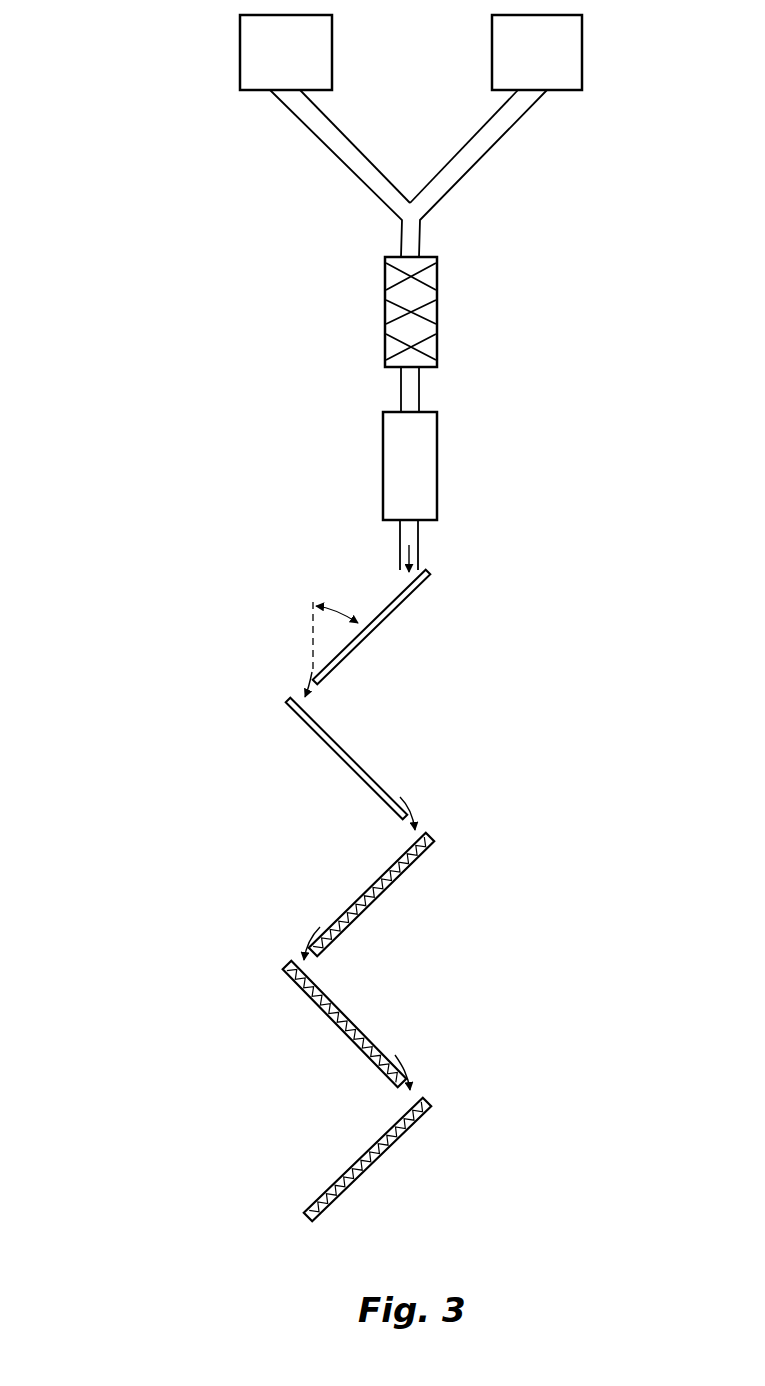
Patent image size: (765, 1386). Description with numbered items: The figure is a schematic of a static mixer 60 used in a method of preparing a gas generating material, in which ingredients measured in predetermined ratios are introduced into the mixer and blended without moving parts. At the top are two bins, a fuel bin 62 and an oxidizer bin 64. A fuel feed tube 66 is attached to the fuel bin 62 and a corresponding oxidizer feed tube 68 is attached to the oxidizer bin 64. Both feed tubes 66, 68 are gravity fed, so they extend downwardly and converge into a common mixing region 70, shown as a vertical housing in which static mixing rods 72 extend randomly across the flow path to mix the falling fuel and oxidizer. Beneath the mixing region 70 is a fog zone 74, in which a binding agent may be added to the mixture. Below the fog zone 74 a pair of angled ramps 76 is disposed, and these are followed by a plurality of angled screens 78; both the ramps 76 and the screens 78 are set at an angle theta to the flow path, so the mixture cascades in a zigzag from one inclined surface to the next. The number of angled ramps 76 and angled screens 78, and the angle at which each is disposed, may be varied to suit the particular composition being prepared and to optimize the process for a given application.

The static mixer 60 is at (180, 129).
The fuel bin 62 is at (537, 52).
The oxidizer bin 64 is at (286, 52).
The fuel feed tube 66 is at (492, 152).
The oxidizer feed tube 68 is at (327, 150).
The common mixing region 70 is at (437, 325).
The static mixing rods 72 is at (385, 297).
The fog zone 74 is at (410, 492).
The angled ramps 76 is at (385, 622).
The angled screens 78 is at (377, 897).